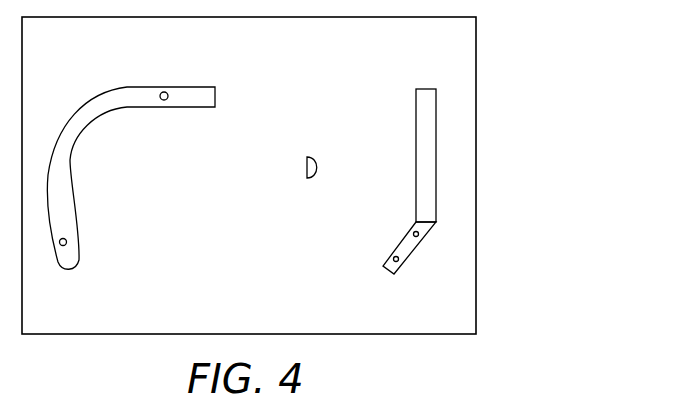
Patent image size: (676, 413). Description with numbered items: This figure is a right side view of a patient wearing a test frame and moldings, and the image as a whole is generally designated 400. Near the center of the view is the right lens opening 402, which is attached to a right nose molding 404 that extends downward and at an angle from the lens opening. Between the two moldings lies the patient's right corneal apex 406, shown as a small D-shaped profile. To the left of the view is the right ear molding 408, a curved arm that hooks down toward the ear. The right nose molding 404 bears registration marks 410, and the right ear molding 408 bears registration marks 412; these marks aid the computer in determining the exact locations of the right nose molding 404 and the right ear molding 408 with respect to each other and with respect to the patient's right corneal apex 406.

The right image of patient 400 is at (518, 118).
The right lens opening 402 is at (430, 199).
The right nose molding 404 is at (410, 247).
The right corneal apex 406 is at (317, 157).
The right ear molding 408 is at (90, 112).
The registration marks 410 is at (410, 234).
The registration marks 412 is at (163, 101).